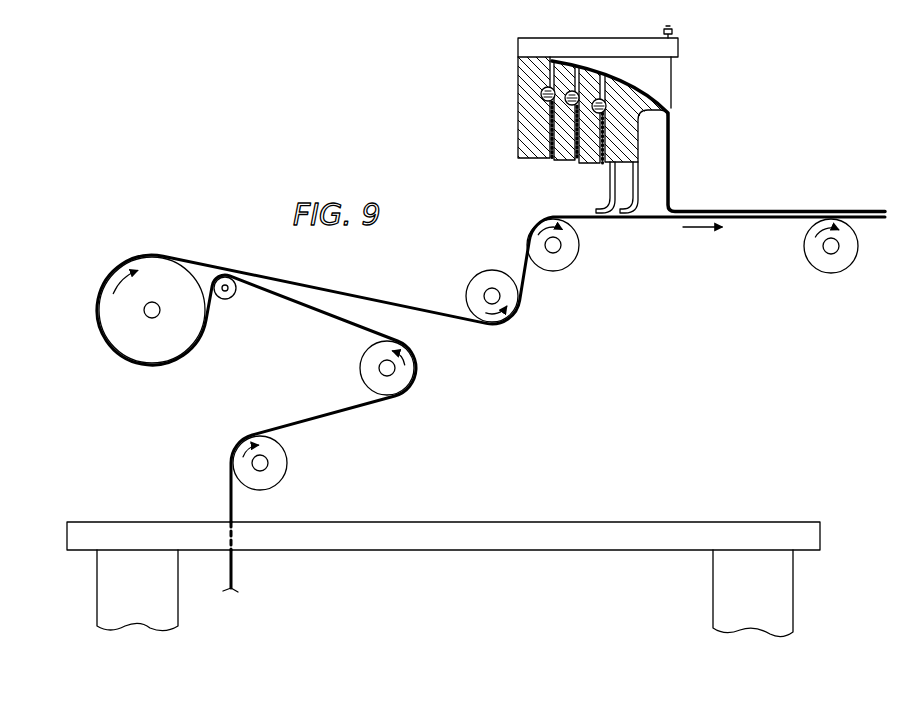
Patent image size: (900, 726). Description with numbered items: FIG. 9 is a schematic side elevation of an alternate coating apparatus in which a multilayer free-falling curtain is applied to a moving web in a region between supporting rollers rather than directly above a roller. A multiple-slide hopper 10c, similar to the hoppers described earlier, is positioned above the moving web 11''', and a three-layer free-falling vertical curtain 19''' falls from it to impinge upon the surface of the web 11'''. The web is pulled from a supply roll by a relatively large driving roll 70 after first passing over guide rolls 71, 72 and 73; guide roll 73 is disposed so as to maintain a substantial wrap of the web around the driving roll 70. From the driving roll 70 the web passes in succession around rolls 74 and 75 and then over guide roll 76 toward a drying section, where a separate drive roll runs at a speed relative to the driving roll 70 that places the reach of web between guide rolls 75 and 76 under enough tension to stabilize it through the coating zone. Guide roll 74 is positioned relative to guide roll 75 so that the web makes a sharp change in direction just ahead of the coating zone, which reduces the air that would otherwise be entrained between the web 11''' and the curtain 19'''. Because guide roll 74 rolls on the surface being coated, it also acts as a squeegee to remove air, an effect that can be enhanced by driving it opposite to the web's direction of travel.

The multiple-slide hopper 10c is at (506, 119).
The moving web 11''' is at (491, 404).
The three-layer free-falling vertical curtain 19''' is at (718, 136).
The driving roll 70 is at (162, 348).
The guide roll 71 is at (280, 473).
The guide roll 72 is at (378, 370).
The guide roll 73 is at (230, 295).
The guide roll 74 is at (484, 278).
The guide roll 75 is at (565, 262).
The guide roll 76 is at (812, 252).